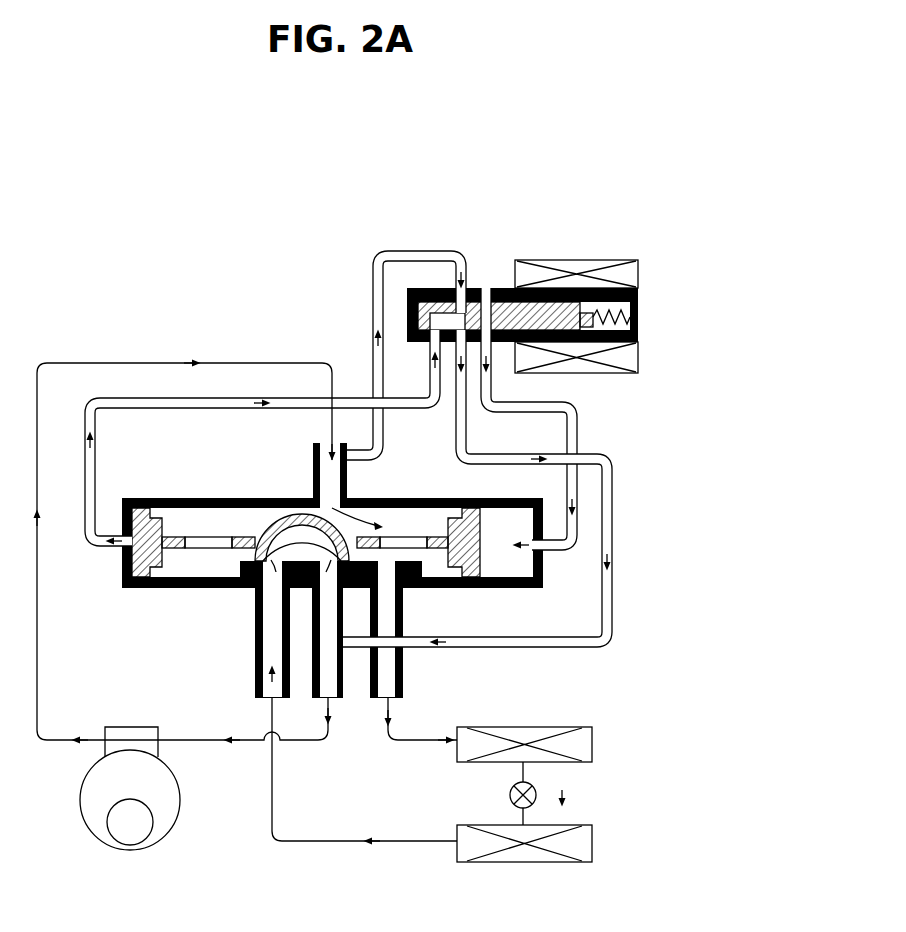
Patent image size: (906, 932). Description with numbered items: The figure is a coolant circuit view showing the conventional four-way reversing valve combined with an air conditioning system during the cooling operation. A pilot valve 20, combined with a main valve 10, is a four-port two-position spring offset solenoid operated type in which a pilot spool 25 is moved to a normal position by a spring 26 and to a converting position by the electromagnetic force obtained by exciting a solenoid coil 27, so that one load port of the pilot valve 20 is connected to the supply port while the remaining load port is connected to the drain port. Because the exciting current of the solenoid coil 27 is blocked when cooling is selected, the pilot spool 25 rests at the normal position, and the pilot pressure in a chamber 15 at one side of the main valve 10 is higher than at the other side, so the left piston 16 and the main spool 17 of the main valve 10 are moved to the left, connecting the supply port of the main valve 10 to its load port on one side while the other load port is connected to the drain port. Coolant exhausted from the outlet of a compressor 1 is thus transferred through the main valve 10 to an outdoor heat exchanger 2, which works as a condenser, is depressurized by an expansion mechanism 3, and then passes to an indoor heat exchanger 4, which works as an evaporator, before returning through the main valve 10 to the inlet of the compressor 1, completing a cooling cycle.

The compressor 1 is at (165, 830).
The outdoor heat exchanger 2 is at (593, 742).
The expansion mechanism 3 is at (510, 792).
The indoor heat exchanger 4 is at (593, 845).
The main valve 10 is at (187, 489).
The chamber 15 is at (502, 568).
The left piston 16 is at (122, 557).
The main spool 17 is at (278, 516).
The pilot valve 20 is at (556, 325).
The pilot spool 25 is at (545, 300).
The spring 26 is at (640, 311).
The solenoid coil 27 is at (600, 272).